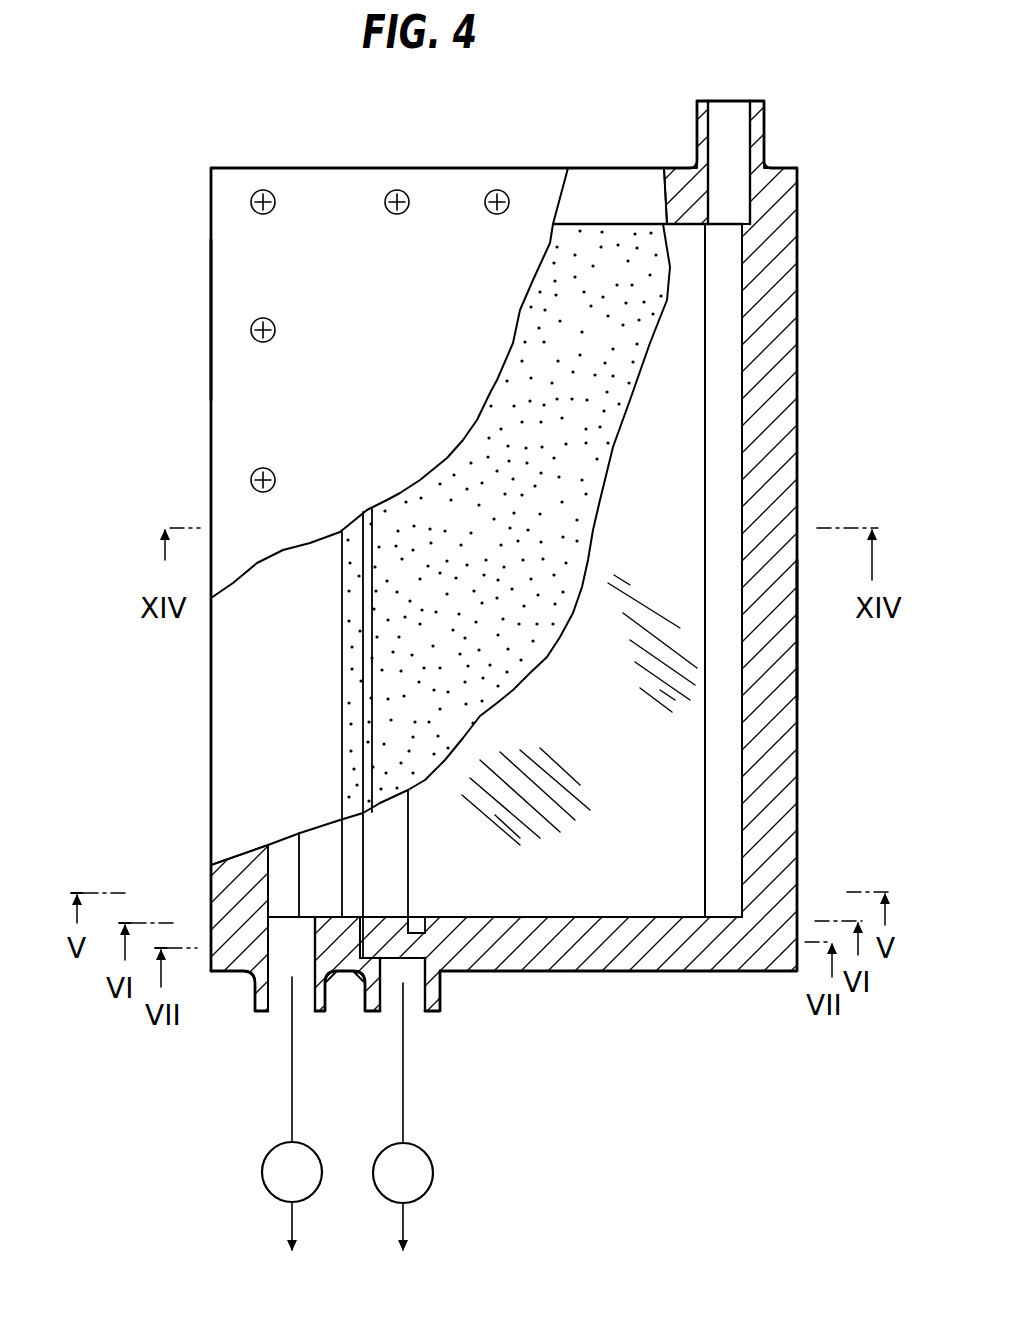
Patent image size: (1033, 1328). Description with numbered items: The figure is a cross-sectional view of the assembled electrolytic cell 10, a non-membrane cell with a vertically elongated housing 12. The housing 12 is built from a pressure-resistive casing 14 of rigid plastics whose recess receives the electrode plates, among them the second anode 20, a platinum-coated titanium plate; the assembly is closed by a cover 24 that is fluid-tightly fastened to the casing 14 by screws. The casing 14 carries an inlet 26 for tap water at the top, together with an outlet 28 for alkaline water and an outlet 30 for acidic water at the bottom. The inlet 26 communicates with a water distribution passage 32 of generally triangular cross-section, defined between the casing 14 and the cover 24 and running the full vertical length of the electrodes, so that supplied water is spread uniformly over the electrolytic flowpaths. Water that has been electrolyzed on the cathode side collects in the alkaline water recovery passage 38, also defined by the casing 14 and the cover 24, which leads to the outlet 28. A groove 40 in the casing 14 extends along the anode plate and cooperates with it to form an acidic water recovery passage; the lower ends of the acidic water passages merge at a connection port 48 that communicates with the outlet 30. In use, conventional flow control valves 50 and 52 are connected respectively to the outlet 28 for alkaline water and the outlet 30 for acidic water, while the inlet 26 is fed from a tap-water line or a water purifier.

The electrolytic cell 10 is at (175, 275).
The housing 12 is at (802, 421).
The casing 14 is at (780, 555).
The second anode 20 is at (628, 247).
The cover 24 is at (353, 187).
The inlet 26 is at (731, 126).
The outlet for alkaline water 28 is at (280, 1000).
The outlet for acidic water 30 is at (395, 997).
The water distribution passage 32 is at (725, 288).
The alkaline water recovery passage 38 is at (282, 857).
The groove 40 is at (395, 857).
The connection port 48 is at (413, 950).
The flow control valve 50 is at (262, 1170).
The flow control valve 52 is at (433, 1170).